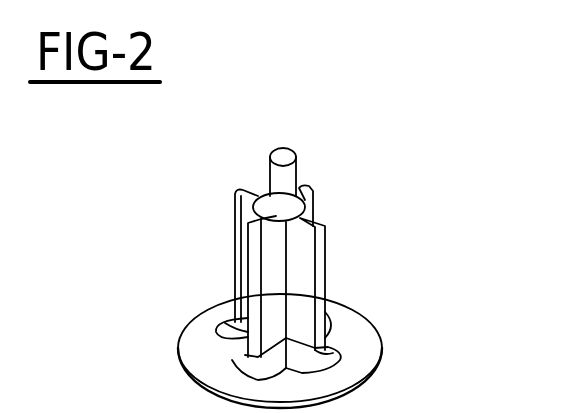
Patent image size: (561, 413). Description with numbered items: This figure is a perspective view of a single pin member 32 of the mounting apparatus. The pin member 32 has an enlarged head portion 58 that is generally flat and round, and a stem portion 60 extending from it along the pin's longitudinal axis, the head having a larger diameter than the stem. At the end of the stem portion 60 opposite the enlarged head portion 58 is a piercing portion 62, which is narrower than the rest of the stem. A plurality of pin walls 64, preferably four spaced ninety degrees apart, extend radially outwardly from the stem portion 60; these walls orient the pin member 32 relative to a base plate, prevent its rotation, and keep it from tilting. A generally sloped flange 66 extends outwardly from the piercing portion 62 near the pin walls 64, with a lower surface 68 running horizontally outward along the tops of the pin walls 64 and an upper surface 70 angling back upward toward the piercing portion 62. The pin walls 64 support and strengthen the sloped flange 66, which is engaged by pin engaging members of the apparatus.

The pin member 32 is at (345, 163).
The enlarged head portion 58 is at (357, 362).
The stem portion 60 is at (283, 183).
The piercing portion 62 is at (282, 157).
The pin walls 64 is at (238, 195).
The sloped flange 66 is at (259, 197).
The lower surface 68 is at (292, 223).
The upper surface 70 is at (250, 201).